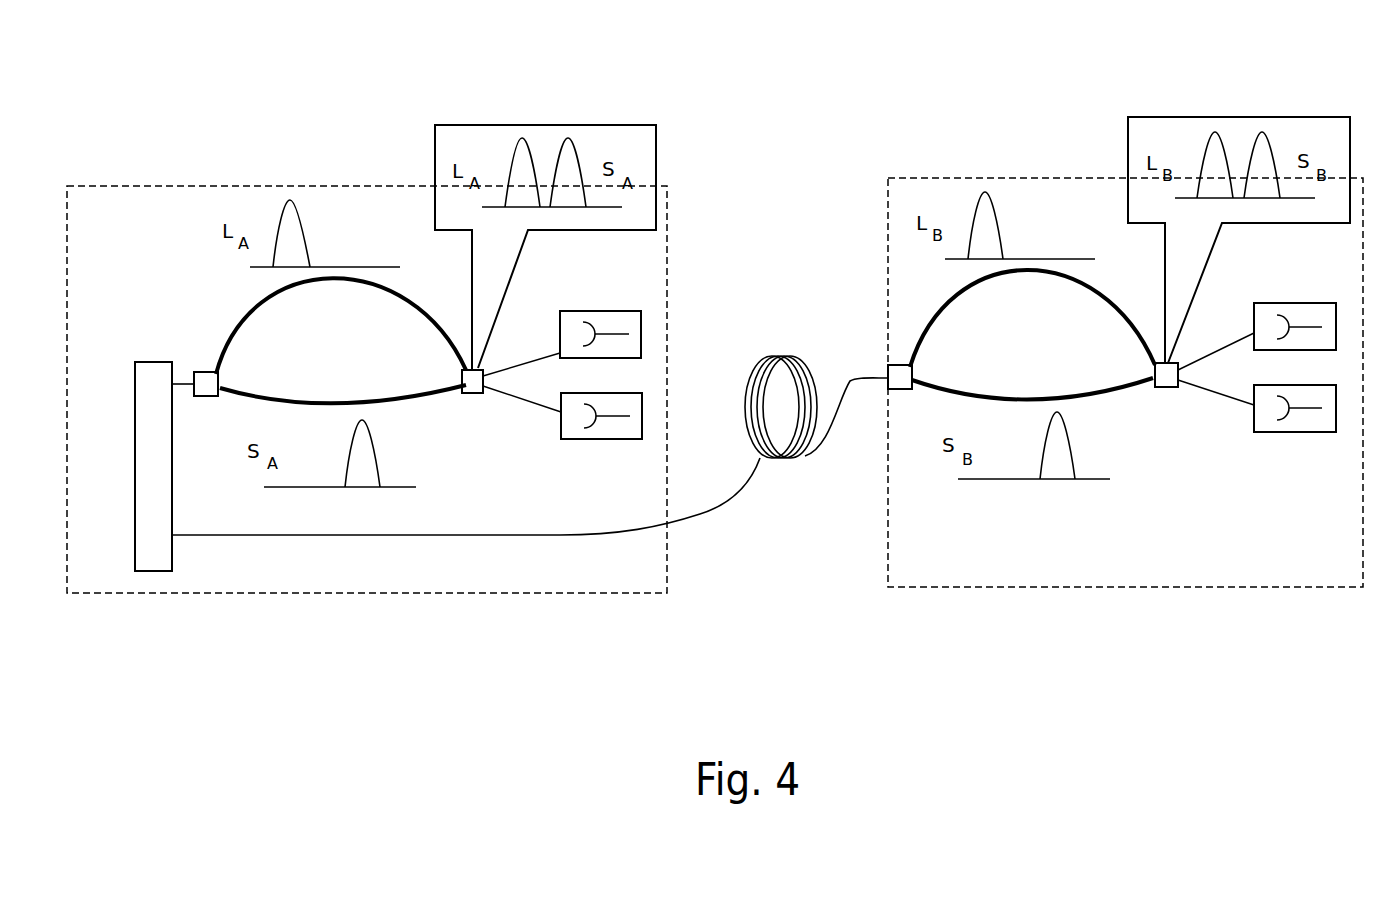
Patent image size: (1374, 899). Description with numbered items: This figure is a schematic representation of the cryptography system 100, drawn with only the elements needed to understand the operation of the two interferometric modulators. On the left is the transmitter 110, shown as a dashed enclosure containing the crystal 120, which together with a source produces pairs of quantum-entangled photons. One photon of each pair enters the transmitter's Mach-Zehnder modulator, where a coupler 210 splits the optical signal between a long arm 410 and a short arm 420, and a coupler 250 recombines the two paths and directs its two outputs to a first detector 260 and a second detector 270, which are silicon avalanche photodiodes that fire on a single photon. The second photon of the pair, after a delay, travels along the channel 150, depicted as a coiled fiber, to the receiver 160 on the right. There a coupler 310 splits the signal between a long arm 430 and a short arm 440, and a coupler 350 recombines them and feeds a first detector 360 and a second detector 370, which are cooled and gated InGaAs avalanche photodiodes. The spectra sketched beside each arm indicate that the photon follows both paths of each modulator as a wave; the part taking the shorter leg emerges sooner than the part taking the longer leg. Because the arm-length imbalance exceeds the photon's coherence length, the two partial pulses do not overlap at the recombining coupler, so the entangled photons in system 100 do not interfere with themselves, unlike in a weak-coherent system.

The cryptography system 100 is at (789, 93).
The transmitter 110 is at (443, 583).
The crystal 120 is at (143, 427).
The channel 150 is at (798, 458).
The receiver 160 is at (975, 587).
The coupler 210 is at (205, 397).
The coupler 250 is at (473, 393).
The first detector 260 is at (627, 318).
The second detector 270 is at (608, 439).
The coupler 310 is at (900, 389).
The coupler 350 is at (1165, 387).
The first detector 360 is at (1300, 309).
The second detector 370 is at (1303, 432).
The long arm 410 is at (355, 284).
The short arm 420 is at (400, 405).
The long arm 430 is at (952, 316).
The short arm 440 is at (1097, 400).